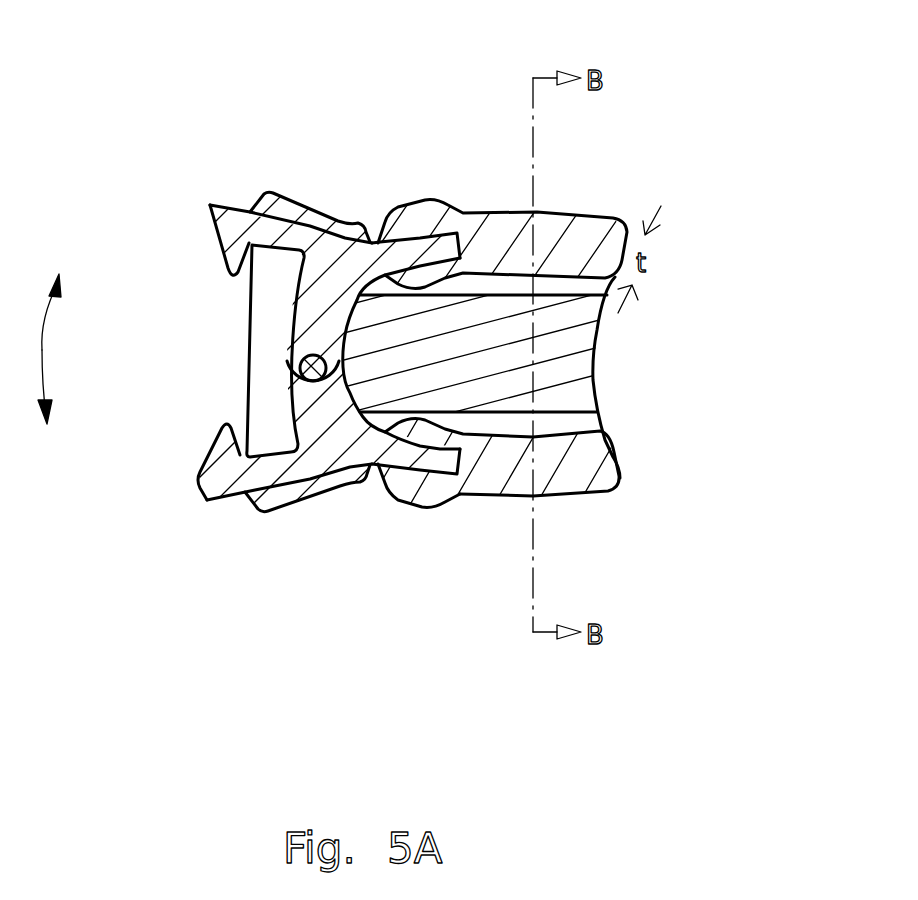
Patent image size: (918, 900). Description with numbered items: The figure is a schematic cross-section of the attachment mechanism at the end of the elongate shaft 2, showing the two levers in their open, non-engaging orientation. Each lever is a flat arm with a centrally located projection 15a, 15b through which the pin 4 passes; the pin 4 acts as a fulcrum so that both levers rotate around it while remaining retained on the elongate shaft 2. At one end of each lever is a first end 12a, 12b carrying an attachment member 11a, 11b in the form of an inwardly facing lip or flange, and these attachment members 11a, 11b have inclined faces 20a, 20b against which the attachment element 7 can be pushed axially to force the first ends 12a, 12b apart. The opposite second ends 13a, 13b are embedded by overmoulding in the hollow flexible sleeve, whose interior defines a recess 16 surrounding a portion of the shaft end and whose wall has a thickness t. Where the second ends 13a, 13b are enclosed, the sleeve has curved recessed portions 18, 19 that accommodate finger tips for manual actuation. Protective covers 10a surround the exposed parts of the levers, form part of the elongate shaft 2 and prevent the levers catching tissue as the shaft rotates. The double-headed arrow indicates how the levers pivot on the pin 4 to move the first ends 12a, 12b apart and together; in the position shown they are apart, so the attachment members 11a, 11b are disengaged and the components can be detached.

The attachment element 7 is at (443, 94).
The elongate shaft 2 is at (573, 363).
The pin 4 is at (300, 365).
The protective cover 10a is at (275, 205).
The attachment member 11a is at (233, 231).
The attachment member 11b is at (215, 483).
The first end 12a is at (306, 226).
The first end 12b is at (226, 490).
The second end 13a is at (412, 250).
The second end 13b is at (368, 478).
The projection 15a is at (310, 313).
The projection 15b is at (313, 417).
The recess 16 is at (590, 421).
The curved recessed portion 18 is at (451, 208).
The curved recessed portion 19 is at (433, 498).
The inclined face 20a is at (217, 247).
The inclined face 20b is at (210, 467).